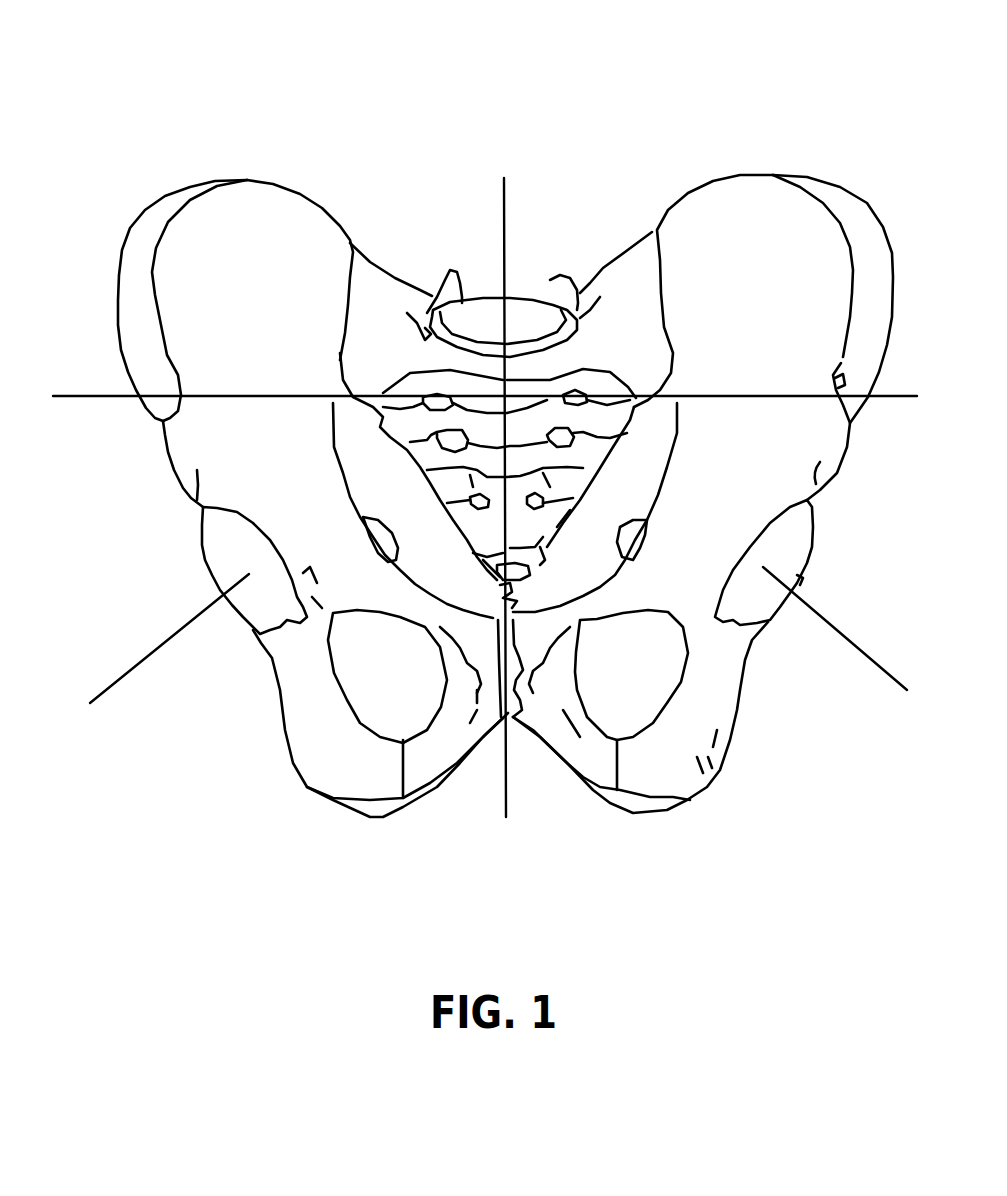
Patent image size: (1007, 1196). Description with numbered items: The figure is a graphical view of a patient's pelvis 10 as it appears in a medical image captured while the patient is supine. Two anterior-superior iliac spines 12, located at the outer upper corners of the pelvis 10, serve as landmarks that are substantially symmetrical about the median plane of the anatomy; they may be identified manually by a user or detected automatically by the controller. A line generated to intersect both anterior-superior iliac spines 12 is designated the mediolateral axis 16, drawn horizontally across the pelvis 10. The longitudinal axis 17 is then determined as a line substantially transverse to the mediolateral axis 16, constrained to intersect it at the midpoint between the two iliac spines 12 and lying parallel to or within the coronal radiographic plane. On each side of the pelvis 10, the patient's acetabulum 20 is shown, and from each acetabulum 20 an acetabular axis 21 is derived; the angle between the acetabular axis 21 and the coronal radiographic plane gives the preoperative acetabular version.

The pelvis 10 is at (498, 466).
The anterior-superior iliac spines 12 is at (137, 312).
The mediolateral axis 16 is at (282, 393).
The longitudinal axis 17 is at (507, 800).
The acetabulum 20 is at (227, 553).
The acetabular axis 21 is at (113, 688).